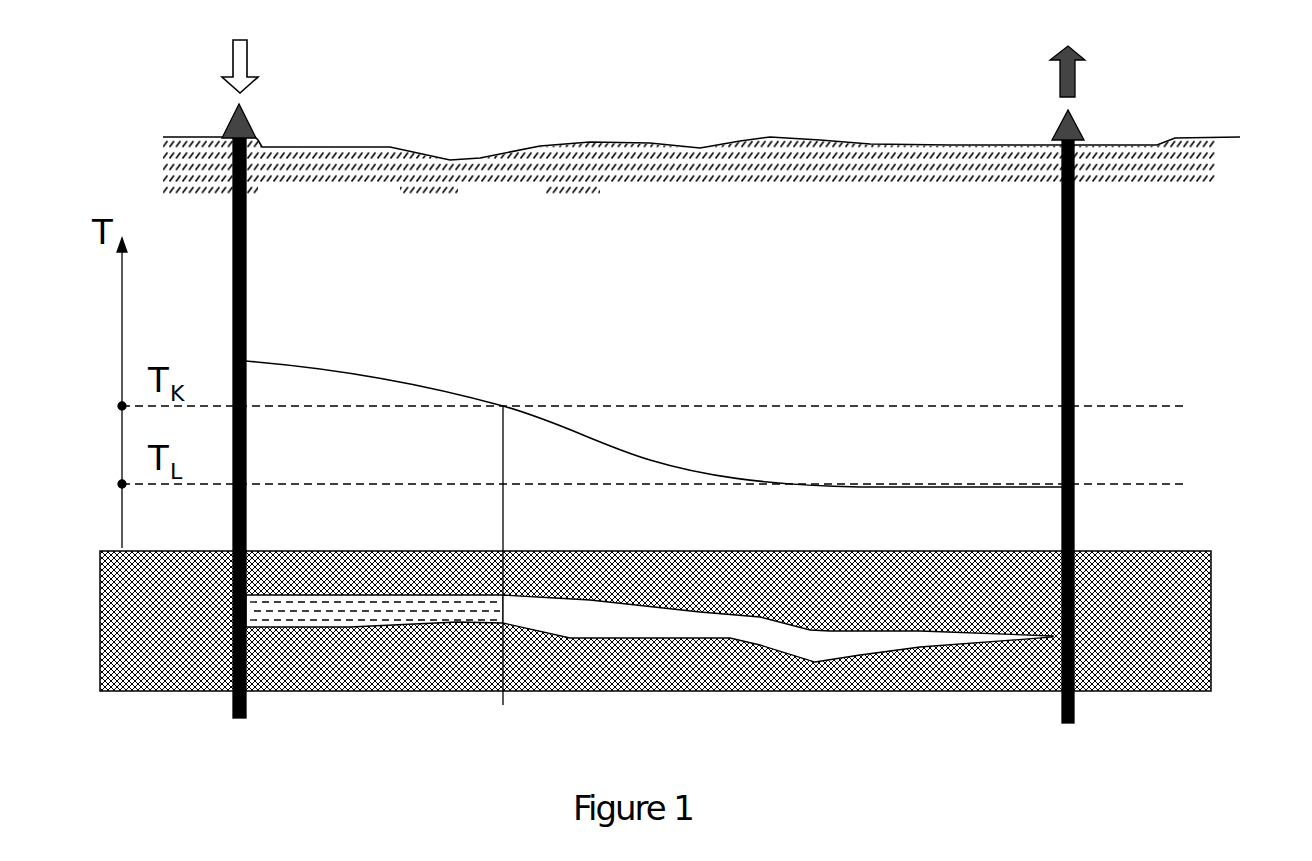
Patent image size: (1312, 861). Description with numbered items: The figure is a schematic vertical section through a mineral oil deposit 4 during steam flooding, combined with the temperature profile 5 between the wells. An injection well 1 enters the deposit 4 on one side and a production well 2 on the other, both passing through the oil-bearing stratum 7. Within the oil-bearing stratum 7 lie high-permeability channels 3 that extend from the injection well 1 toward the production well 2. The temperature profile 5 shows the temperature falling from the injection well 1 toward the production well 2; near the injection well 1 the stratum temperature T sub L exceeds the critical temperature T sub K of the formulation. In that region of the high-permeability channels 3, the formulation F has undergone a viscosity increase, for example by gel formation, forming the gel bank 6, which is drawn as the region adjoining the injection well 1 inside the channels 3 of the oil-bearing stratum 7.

The injection well 1 is at (246, 317).
The production well 2 is at (1075, 330).
The high-permeability zone 3 is at (815, 636).
The deposit 4 is at (1235, 589).
The temperature profile 5 is at (448, 388).
The gel bank 6 is at (330, 603).
The oil-bearing stratum 7 is at (1128, 618).